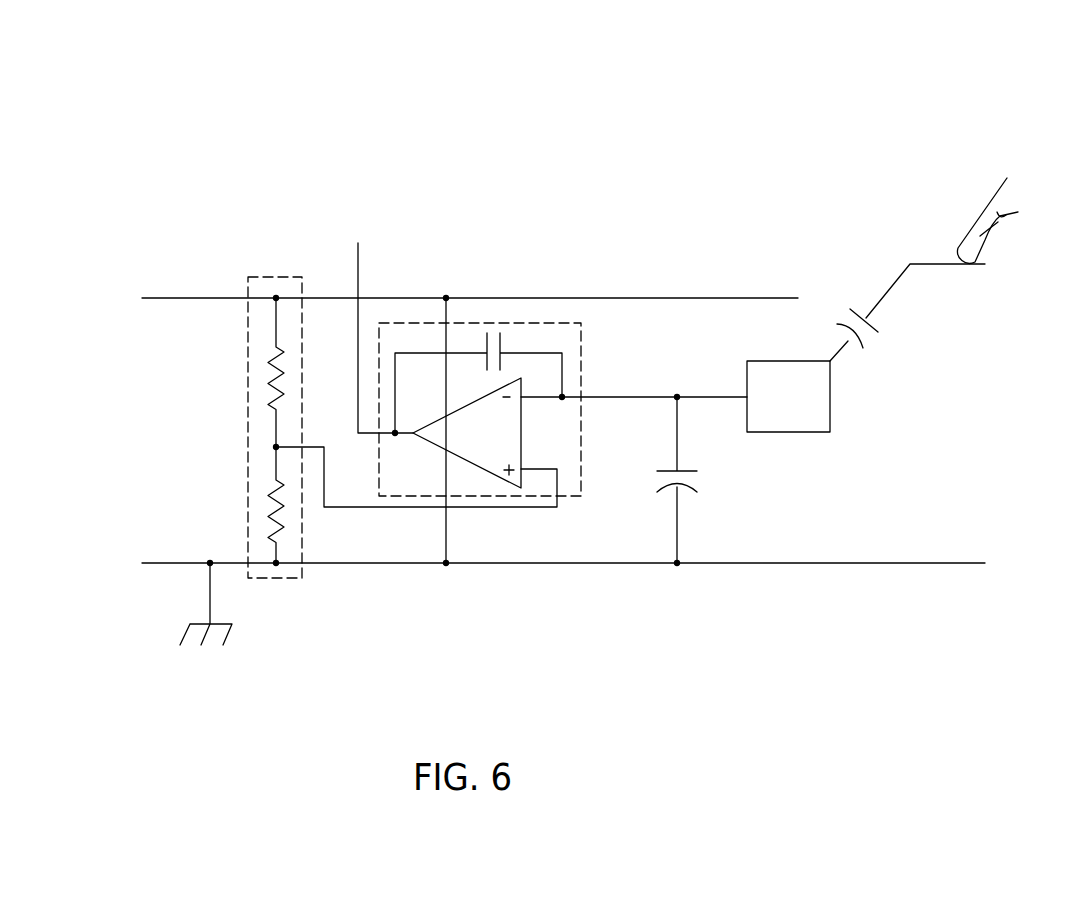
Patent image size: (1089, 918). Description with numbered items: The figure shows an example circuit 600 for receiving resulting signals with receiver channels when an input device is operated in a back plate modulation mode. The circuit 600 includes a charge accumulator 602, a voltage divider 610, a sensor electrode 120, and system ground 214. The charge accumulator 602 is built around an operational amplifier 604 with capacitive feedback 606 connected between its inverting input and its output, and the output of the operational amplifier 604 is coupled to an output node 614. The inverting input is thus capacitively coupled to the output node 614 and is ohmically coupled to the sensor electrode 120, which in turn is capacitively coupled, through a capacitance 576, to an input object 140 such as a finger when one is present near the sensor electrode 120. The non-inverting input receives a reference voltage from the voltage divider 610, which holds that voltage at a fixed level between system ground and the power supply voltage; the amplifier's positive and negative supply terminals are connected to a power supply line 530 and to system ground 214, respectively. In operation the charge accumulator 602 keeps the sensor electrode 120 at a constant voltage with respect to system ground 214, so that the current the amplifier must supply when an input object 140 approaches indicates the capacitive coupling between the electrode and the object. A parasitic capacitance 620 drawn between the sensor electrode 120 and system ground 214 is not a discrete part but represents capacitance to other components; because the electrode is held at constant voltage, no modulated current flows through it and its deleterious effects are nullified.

The circuit 600 is at (839, 91).
The power supply line 530 is at (706, 298).
The system ground 214 is at (210, 590).
The voltage divider 610 is at (267, 277).
The output node 614 is at (358, 258).
The charge accumulator 602 is at (581, 357).
The operational amplifier 604 is at (482, 398).
The capacitive feedback 606 is at (502, 341).
The parasitic capacitance 620 is at (677, 522).
The sensor electrode 120 is at (830, 403).
The capacitance 576 is at (866, 314).
The input object 140 is at (960, 232).